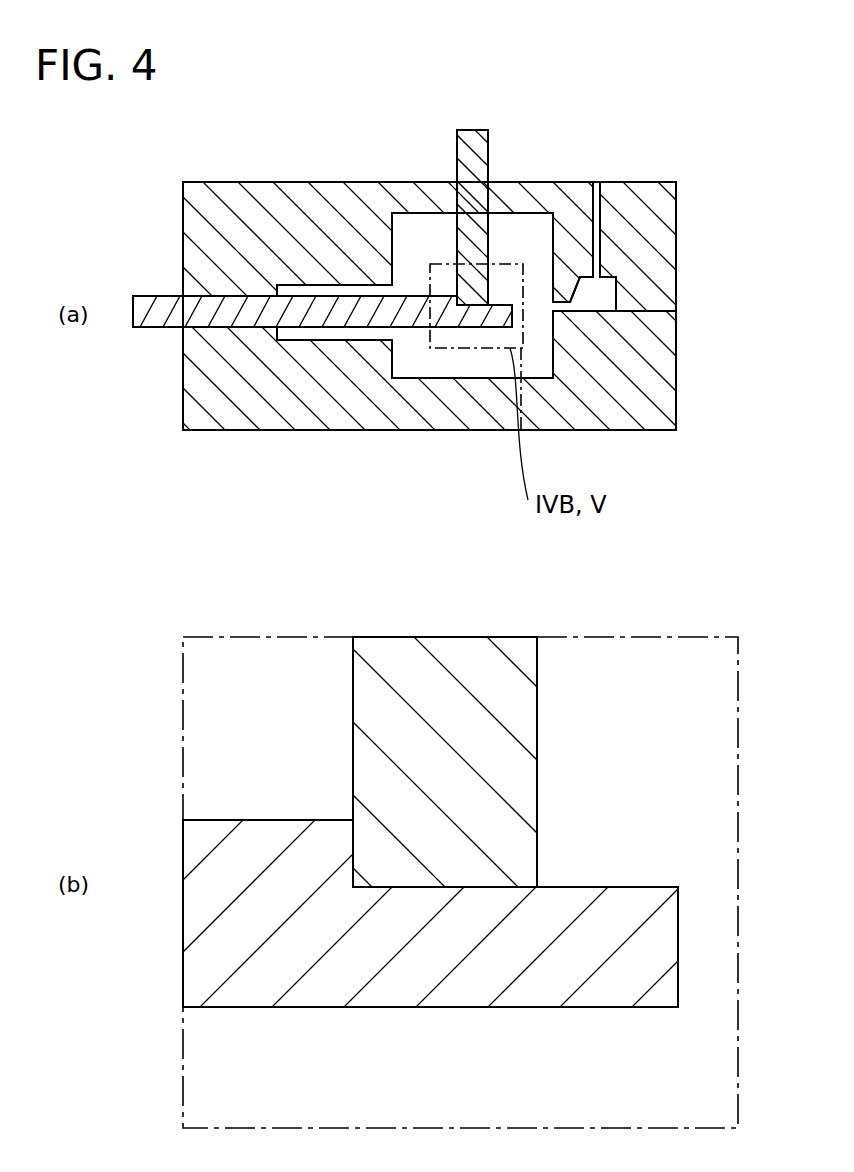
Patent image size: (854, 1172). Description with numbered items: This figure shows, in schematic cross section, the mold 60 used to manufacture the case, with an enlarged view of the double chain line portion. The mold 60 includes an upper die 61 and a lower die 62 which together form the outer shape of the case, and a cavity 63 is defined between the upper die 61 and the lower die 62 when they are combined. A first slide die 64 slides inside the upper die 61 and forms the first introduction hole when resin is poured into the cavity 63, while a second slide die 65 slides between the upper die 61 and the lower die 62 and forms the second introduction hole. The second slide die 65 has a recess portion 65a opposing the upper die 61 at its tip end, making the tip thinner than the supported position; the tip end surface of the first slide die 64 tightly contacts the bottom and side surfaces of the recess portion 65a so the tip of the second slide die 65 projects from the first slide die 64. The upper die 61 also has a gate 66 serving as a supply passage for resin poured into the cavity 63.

The mold 60 is at (700, 178).
The upper die 61 is at (658, 250).
The lower die 62 is at (658, 362).
The cavity 63 is at (523, 238).
The first slide die 64 is at (470, 147).
The second slide die 65 is at (158, 326).
The recess portion 65a is at (357, 833).
The gate 66 is at (598, 190).